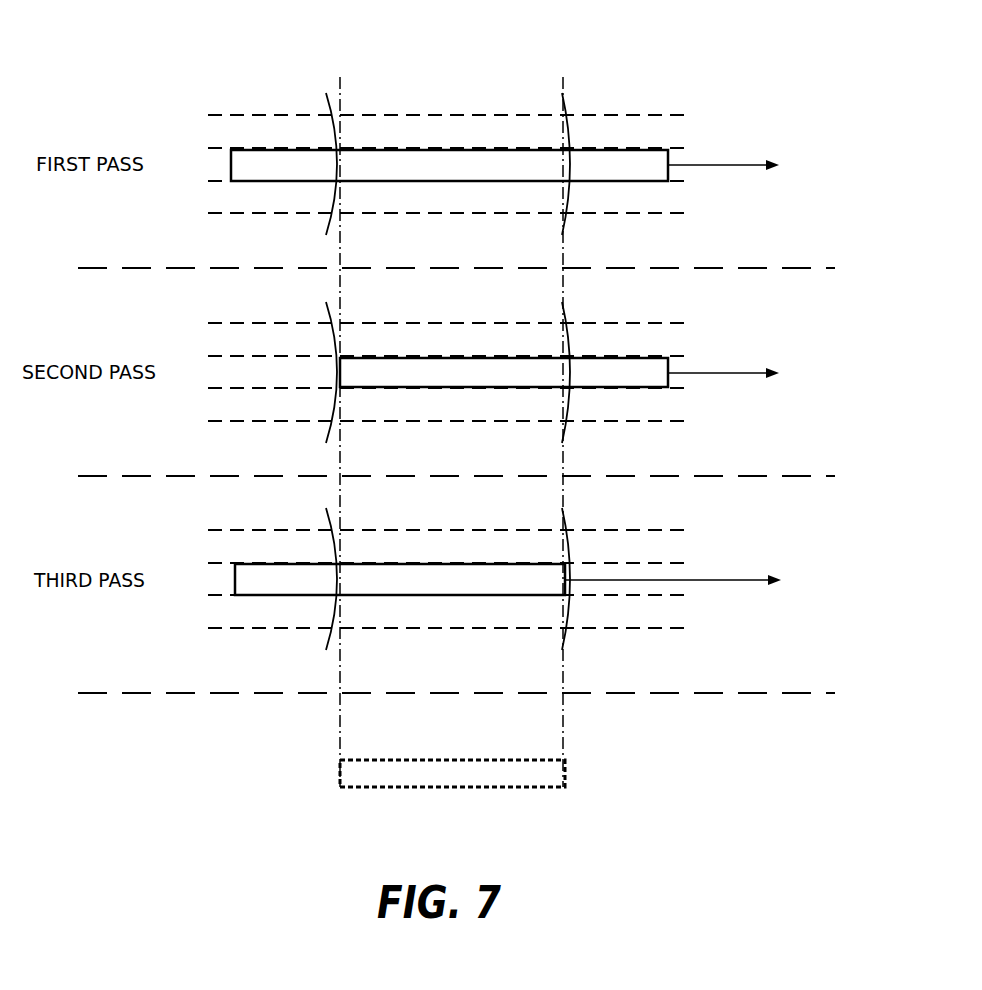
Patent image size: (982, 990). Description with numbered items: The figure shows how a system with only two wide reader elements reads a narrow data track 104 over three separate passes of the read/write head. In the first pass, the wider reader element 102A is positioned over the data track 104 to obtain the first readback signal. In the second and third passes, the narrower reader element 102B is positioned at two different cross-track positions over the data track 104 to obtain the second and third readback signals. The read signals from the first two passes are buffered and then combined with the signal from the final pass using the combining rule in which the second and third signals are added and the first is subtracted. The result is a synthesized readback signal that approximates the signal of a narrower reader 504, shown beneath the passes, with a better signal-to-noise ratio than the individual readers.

The data track 104 is at (443, 63).
The reader element 102A is at (525, 164).
The reader element 102B is at (529, 475).
The synthesized reader 504 is at (362, 777).